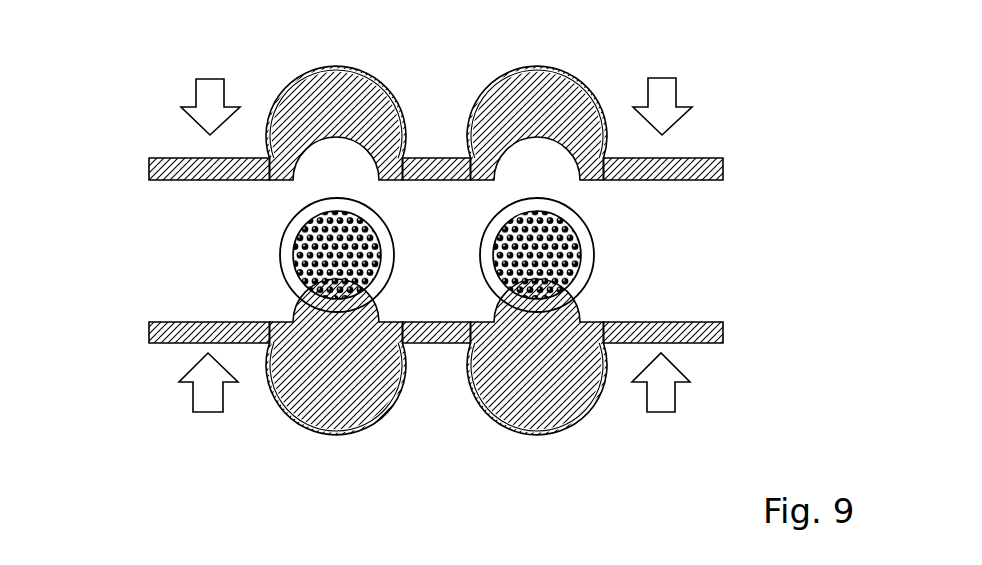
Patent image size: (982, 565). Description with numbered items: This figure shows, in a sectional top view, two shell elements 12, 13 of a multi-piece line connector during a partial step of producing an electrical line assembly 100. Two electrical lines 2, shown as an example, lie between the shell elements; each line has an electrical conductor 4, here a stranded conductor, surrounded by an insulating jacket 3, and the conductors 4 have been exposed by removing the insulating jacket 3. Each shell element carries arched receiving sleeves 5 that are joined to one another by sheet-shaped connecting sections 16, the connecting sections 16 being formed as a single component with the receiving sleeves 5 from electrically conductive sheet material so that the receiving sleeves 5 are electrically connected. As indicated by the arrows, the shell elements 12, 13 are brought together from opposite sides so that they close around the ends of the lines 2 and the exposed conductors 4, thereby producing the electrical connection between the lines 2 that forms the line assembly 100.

The electrical line assembly 100 is at (104, 88).
The shell element 12 is at (150, 172).
The shell element 13 is at (150, 331).
The receiving sleeve 5 is at (337, 148).
The connecting section 16 is at (440, 158).
The electrical line 2 is at (287, 257).
The insulating jacket 3 is at (437, 255).
The electrical conductor 4 is at (315, 275).